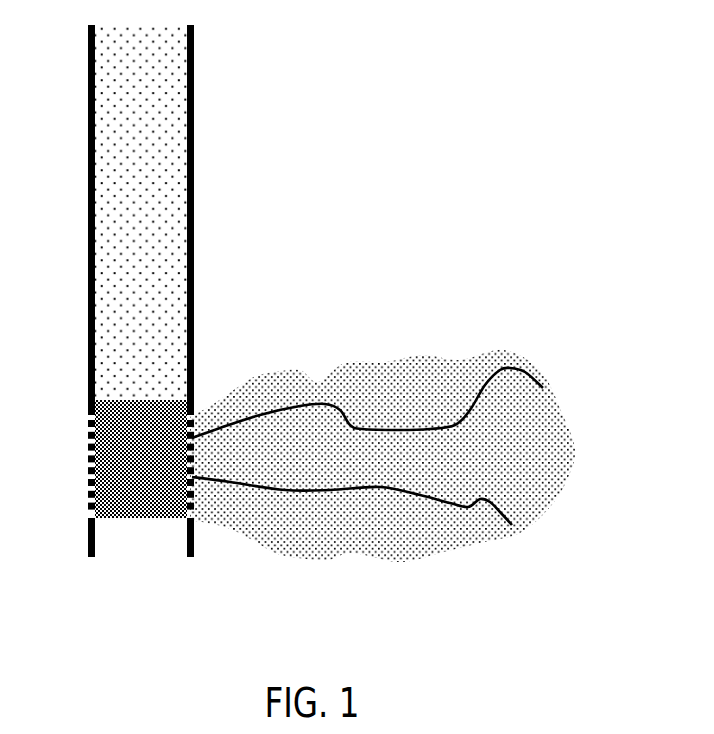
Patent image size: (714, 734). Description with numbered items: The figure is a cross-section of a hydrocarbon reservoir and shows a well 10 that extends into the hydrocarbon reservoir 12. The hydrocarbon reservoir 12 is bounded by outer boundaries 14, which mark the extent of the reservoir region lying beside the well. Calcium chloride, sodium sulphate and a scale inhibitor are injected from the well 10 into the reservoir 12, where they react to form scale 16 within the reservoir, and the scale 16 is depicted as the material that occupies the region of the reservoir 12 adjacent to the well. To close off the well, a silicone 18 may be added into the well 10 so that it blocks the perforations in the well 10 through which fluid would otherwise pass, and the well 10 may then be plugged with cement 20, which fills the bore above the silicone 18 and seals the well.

The well 10 is at (90, 333).
The hydrocarbon reservoir 12 is at (607, 428).
The outer boundaries 14 is at (507, 368).
The scale 16 is at (386, 543).
The silicone 18 is at (143, 517).
The cement 20 is at (157, 238).